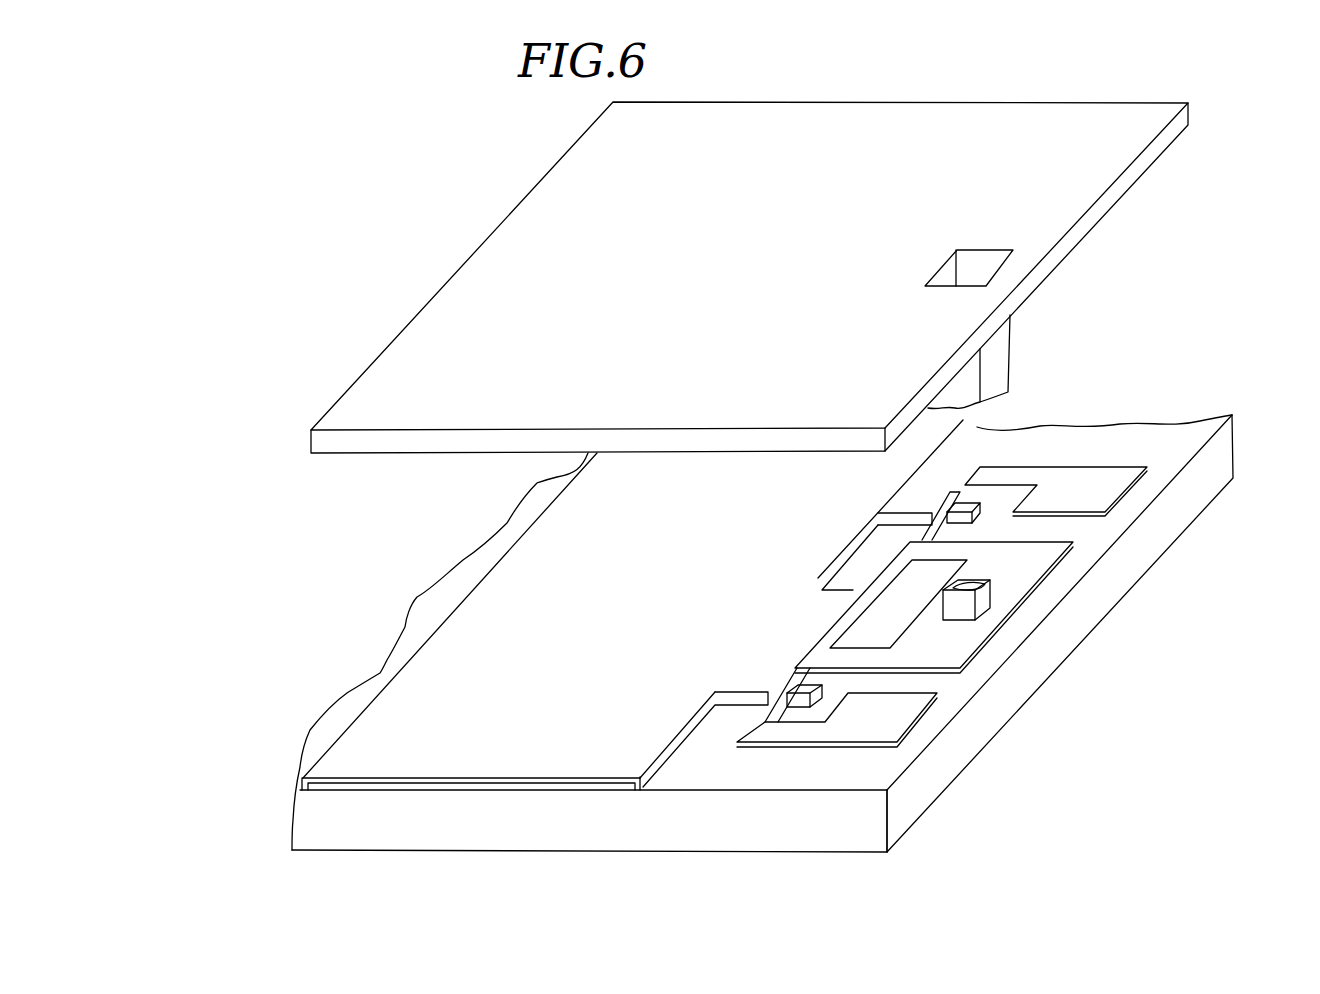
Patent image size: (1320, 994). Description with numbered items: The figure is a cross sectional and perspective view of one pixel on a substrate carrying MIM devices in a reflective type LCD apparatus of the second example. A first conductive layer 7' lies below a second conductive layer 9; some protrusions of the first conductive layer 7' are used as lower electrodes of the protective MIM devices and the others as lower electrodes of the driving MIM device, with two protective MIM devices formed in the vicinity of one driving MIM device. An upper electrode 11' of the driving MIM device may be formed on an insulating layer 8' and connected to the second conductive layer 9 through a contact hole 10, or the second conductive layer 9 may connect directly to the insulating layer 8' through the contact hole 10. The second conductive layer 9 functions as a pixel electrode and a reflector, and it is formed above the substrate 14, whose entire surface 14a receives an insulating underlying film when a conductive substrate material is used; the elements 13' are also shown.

The second conductive layer 9 is at (858, 125).
The contact hole 10 is at (982, 258).
The substrate 14 is at (313, 822).
The surface of the substrate 14a is at (893, 763).
The insulating layer 8' is at (510, 621).
The first conductive layer 7' is at (431, 763).
The upper electrode 11' is at (966, 571).
The conductor pads 13' is at (1002, 626).